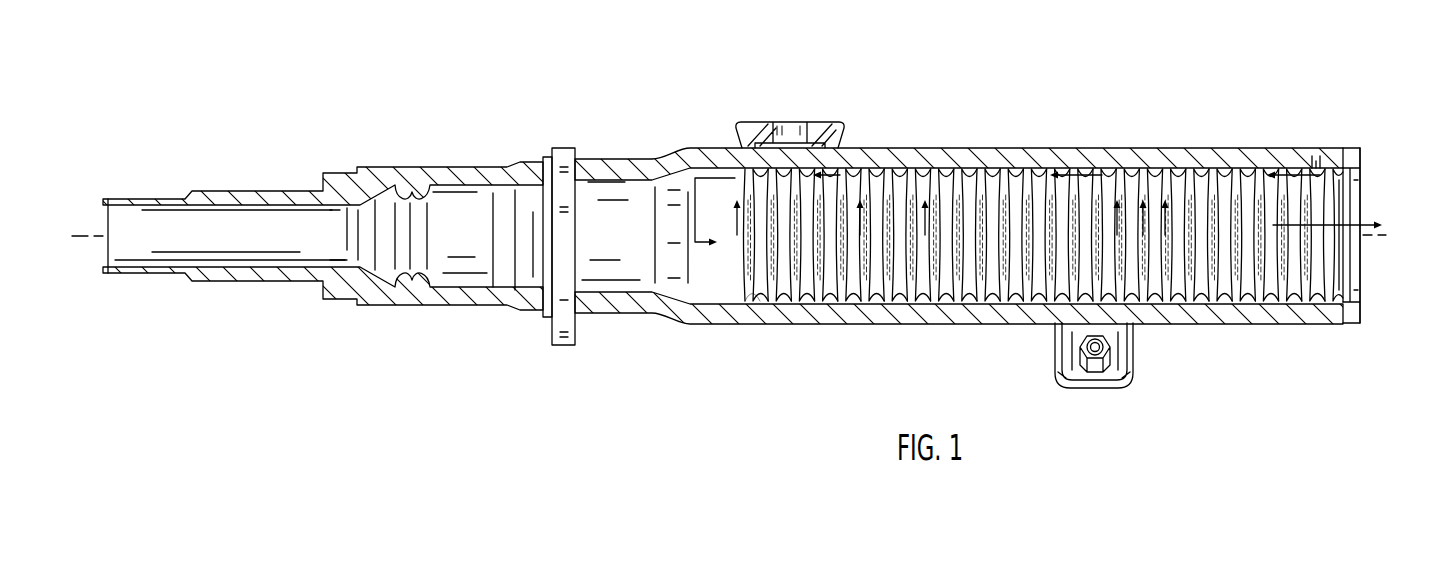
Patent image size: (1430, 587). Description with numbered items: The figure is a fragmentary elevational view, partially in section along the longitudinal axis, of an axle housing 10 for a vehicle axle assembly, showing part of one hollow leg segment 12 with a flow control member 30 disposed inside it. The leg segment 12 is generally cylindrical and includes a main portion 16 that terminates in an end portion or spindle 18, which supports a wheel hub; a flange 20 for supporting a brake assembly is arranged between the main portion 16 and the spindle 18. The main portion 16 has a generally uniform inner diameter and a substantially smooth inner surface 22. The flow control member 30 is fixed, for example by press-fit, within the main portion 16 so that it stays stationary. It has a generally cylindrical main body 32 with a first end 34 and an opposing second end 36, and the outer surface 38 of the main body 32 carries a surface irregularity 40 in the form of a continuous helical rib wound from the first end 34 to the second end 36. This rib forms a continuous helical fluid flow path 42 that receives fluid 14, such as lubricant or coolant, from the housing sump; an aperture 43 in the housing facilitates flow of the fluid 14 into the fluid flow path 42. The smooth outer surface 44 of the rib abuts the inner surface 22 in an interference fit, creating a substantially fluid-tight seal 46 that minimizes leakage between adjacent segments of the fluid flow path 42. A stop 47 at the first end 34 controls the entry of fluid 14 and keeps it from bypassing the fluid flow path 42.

The axle housing 10 is at (224, 56).
The leg segment 12 is at (387, 163).
The fluid 14 is at (1314, 145).
The main portion 16 is at (925, 149).
The spindle 18 is at (237, 192).
The flange 20 is at (563, 147).
The inner surface 22 is at (744, 301).
The flow control member 30 is at (740, 160).
The main body 32 is at (878, 178).
The first end 34 is at (1347, 170).
The second end 36 is at (733, 195).
The outer surface 38 is at (1012, 177).
The surface irregularity 40 is at (1137, 170).
The fluid flow path 42 is at (1187, 172).
The aperture 43 is at (1318, 167).
The outer surface of the surface irregularity 44 is at (1230, 170).
The fluid-tight seal 46 is at (1108, 173).
The stop 47 is at (1348, 188).